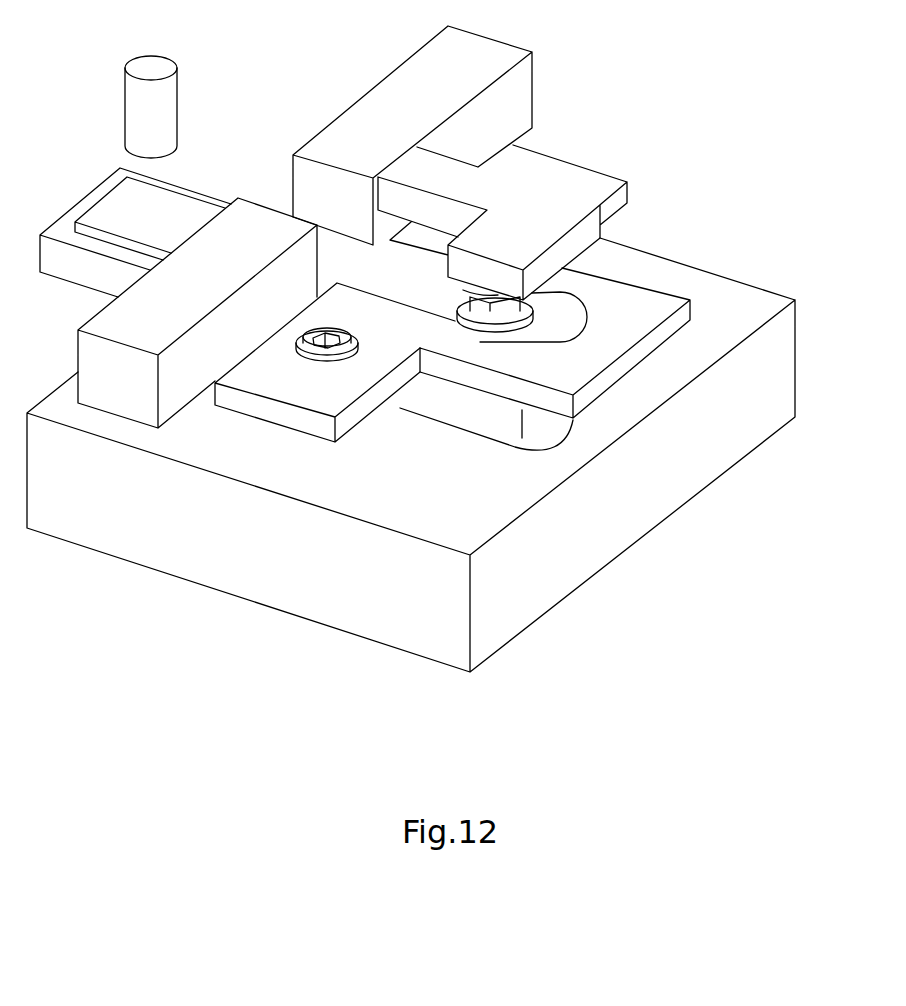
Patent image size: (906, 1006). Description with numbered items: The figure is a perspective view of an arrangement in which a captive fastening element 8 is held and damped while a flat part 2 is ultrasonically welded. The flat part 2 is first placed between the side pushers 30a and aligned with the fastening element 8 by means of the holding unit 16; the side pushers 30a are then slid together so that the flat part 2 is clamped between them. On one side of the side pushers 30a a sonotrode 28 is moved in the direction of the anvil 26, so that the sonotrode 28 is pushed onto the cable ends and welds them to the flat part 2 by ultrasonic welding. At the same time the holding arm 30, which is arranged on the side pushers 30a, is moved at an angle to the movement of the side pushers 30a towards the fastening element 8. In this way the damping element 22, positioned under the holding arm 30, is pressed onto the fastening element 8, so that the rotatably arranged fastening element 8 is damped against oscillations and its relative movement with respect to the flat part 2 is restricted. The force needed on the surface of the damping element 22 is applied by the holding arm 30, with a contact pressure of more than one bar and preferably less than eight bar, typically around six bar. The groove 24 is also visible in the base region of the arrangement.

The flat part 2 is at (345, 258).
The fastening element 8 is at (490, 313).
The holding unit 16 is at (645, 302).
The damping element 22 is at (478, 296).
The groove 24 is at (498, 427).
The anvil 26 is at (290, 585).
The sonotrode 28 is at (164, 111).
The holding arm 30 is at (540, 205).
The side pushers 30a is at (350, 128).